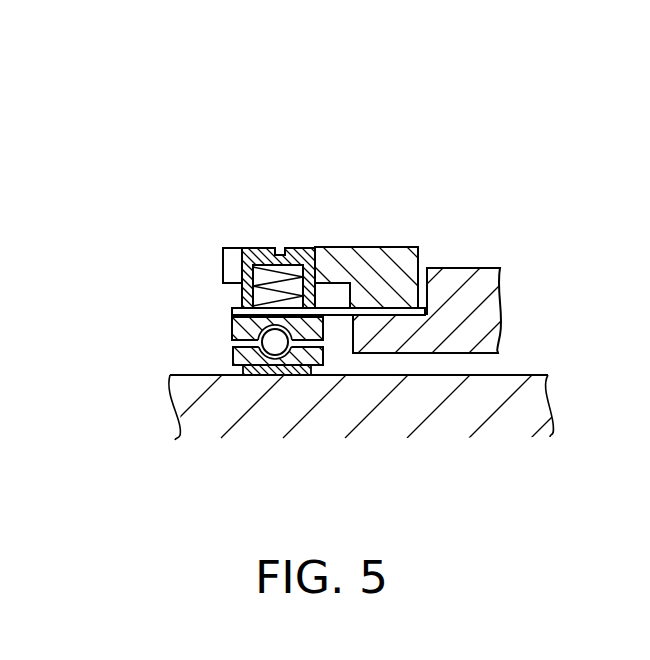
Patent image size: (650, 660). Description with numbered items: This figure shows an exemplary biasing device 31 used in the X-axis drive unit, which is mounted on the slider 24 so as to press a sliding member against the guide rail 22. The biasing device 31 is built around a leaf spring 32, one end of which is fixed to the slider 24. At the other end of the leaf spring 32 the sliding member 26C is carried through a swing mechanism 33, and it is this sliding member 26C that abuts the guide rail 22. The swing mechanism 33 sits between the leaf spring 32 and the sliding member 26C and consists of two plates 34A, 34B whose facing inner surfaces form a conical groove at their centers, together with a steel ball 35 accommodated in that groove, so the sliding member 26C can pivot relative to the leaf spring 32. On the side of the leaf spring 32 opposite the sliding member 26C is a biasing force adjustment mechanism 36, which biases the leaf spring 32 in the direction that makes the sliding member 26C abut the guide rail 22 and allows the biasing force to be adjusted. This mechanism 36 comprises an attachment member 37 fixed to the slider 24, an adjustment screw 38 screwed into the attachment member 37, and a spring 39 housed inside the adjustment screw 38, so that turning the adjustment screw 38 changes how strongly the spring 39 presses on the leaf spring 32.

The guide rail 22 is at (525, 388).
The slider 24 is at (468, 268).
The sliding member 26C is at (297, 375).
The biasing device 31 is at (537, 135).
The leaf spring 32 is at (230, 308).
The swing mechanism 33 is at (90, 275).
The plate 34A is at (232, 322).
The plate 34B is at (233, 362).
The steel ball 35 is at (262, 342).
The biasing force adjustment mechanism 36 is at (365, 177).
The attachment member 37 is at (347, 247).
The adjustment screw 38 is at (302, 247).
The spring 39 is at (260, 247).